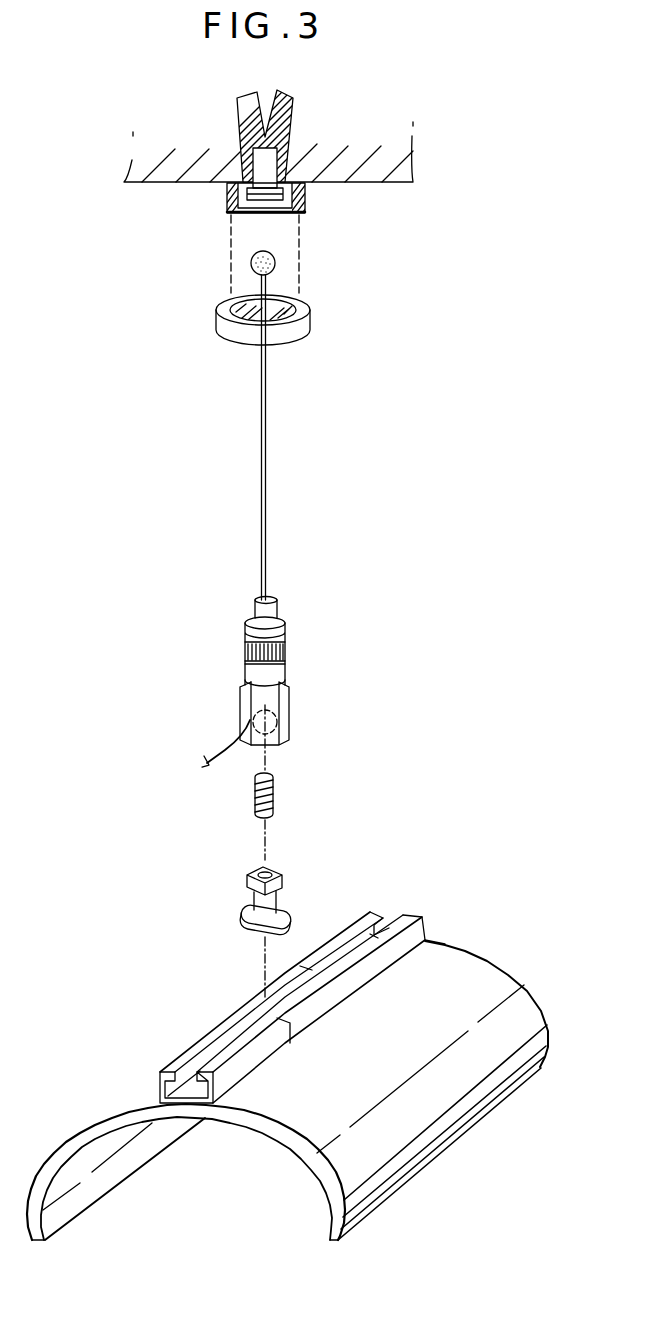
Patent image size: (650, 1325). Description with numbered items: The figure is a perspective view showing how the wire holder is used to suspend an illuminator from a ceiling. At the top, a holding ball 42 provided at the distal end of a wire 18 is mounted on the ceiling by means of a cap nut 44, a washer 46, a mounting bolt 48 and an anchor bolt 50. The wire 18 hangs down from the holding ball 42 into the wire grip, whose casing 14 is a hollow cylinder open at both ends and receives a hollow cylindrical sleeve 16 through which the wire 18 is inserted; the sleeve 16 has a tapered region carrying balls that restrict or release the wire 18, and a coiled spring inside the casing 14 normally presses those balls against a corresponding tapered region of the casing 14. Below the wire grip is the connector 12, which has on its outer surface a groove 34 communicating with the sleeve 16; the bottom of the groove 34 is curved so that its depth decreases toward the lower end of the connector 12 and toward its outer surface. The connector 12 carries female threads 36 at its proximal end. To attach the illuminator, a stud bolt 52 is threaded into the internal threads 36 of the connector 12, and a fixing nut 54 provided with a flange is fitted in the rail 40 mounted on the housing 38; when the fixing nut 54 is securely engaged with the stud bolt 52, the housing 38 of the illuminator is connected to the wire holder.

The connector 12 is at (287, 700).
The casing 14 is at (247, 630).
The sleeve 16 is at (277, 607).
The wire 18 is at (220, 745).
The groove 34 is at (247, 707).
The threads 36 is at (277, 730).
The housing 38 is at (485, 968).
The rail 40 is at (407, 913).
The holding ball 42 is at (250, 262).
The cap nut 44 is at (310, 322).
The washer 46 is at (227, 203).
The mounting bolt 48 is at (283, 213).
The anchor bolt 50 is at (237, 110).
The stud bolt 52 is at (275, 793).
The fixing nut 54 is at (282, 883).